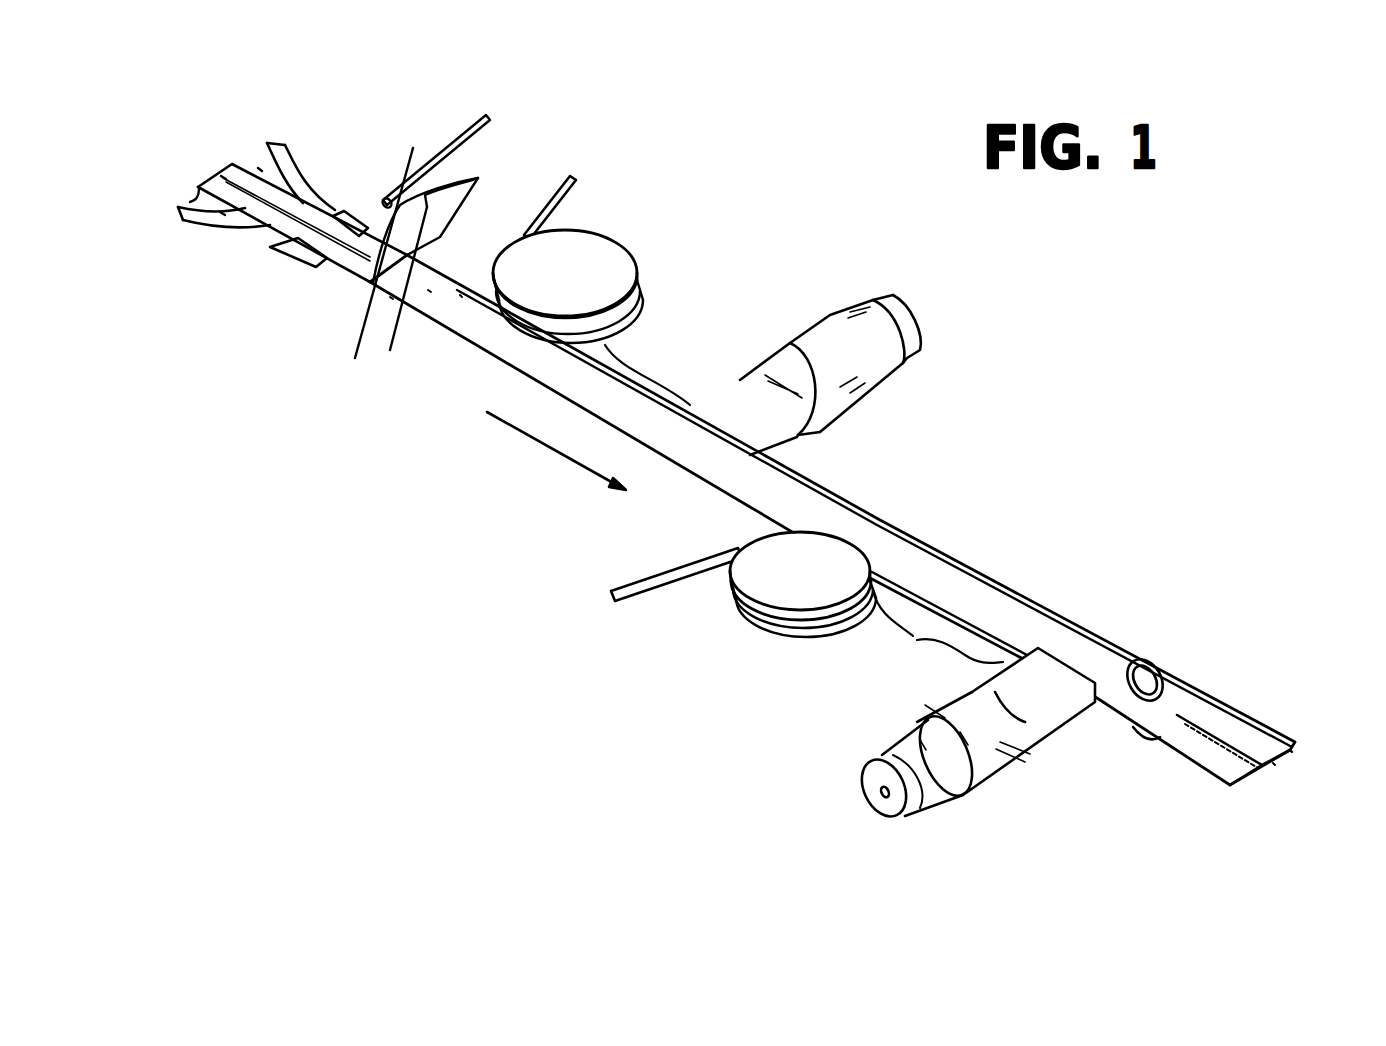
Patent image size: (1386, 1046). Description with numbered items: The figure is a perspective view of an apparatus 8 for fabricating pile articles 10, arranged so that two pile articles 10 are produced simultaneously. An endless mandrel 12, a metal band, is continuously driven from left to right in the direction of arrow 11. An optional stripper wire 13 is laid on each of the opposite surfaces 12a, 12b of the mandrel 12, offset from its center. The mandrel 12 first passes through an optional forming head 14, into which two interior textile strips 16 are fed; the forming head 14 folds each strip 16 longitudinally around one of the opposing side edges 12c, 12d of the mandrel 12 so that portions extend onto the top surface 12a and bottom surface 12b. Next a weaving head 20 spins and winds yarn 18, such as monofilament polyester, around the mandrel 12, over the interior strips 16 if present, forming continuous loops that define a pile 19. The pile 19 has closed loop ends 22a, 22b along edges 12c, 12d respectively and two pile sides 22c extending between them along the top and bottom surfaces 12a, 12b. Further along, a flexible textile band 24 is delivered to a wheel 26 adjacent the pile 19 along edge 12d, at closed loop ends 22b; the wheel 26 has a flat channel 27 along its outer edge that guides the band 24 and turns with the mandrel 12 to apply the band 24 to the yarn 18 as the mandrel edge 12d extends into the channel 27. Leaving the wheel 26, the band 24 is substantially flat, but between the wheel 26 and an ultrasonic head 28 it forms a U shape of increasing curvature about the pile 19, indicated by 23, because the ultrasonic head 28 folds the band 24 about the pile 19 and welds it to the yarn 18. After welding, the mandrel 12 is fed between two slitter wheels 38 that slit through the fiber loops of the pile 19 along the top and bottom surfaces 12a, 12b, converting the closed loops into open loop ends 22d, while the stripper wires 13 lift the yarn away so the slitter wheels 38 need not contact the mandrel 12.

The apparatus 8 is at (782, 199).
The pile article 10 is at (1290, 753).
The arrow 11 is at (571, 462).
The endless mandrel 12 is at (212, 183).
The top surface of mandrel 12a is at (221, 176).
The bottom surface of mandrel 12b is at (190, 202).
The side edge of mandrel 12c is at (220, 212).
The side edge of mandrel 12d is at (259, 168).
The stripper wire 13 is at (232, 165).
The forming head 14 is at (300, 260).
The interior textile strip 16 is at (287, 147).
The yarn 18 is at (473, 179).
The pile 19 is at (458, 335).
The weaving head 20 is at (445, 152).
The closed loop end 22a is at (428, 290).
The closed loop end 22b is at (460, 295).
The pile side 22c is at (390, 297).
The open loop end 22d is at (1273, 763).
The U-shape of band 23 is at (605, 345).
The flexible textile band 24 is at (558, 190).
The wheel 26 is at (603, 253).
The flat channel 27 is at (633, 313).
The ultrasonic head 28 is at (920, 335).
The slitter wheel 38 is at (1143, 658).